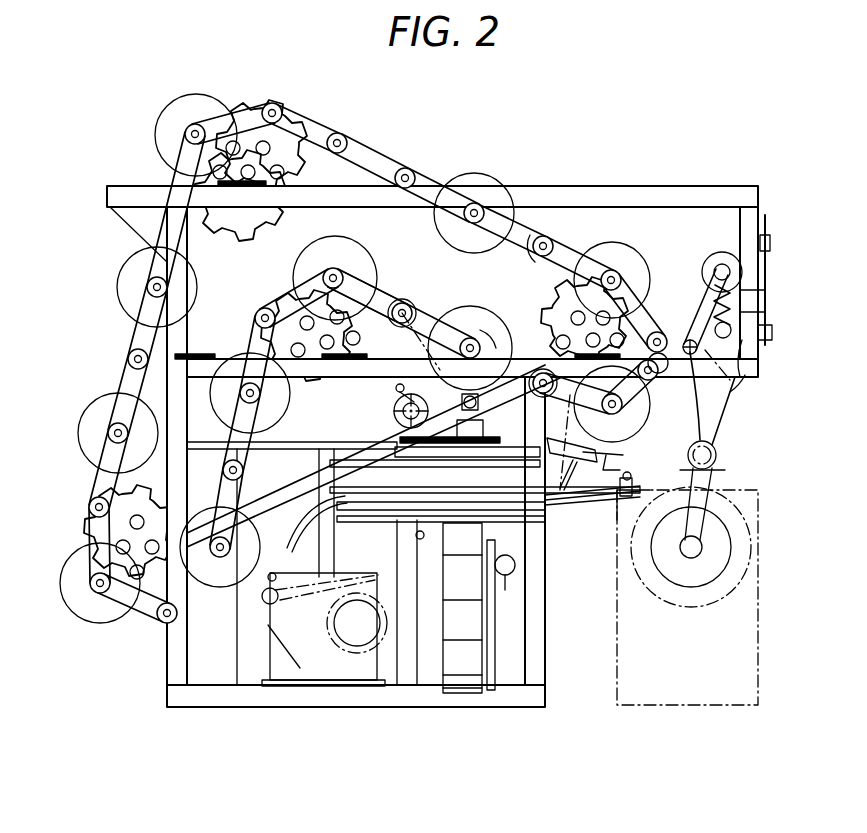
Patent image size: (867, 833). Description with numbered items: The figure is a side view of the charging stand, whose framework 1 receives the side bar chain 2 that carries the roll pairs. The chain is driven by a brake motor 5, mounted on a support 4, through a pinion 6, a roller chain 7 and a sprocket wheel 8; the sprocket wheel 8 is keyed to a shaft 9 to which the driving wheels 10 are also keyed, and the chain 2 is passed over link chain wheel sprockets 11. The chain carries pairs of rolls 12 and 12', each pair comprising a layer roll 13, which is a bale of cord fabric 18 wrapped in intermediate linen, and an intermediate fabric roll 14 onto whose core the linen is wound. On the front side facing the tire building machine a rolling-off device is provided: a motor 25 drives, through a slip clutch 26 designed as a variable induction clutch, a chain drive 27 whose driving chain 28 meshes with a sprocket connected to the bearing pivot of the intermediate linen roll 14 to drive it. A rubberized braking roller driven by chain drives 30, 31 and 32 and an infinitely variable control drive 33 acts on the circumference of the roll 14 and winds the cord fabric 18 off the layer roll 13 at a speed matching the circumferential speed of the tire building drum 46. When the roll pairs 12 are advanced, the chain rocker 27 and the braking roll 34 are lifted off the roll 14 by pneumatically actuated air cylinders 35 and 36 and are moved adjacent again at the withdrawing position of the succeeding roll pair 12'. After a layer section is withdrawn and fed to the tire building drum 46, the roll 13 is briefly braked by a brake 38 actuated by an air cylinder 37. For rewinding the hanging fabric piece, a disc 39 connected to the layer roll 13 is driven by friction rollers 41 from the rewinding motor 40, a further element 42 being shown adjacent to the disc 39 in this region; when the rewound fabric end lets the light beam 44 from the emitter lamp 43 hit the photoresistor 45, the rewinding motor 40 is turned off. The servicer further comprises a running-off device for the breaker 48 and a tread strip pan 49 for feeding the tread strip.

The framework 1 is at (516, 194).
The side bar chain 2 is at (278, 106).
The support 4 is at (412, 445).
The brake motor 5 is at (394, 417).
The pinion 6 is at (406, 398).
The roller chain 7 is at (262, 405).
The sprocket wheel 8 is at (404, 385).
The shaft 9 is at (290, 333).
The driving wheel 10 is at (372, 322).
The link chain wheel sprocket 11 is at (250, 232).
The pair of rolls 12 is at (636, 404).
The pair of rolls 12' is at (566, 197).
The layer roll 13 is at (640, 423).
The intermediate fabric roll 14 is at (662, 300).
The cord fabric 18 is at (718, 473).
The motor 25 is at (745, 388).
The slip clutch 26 is at (742, 335).
The chain drive 27 is at (686, 343).
The driving chain 28 is at (683, 330).
The chain drive 30 is at (722, 400).
The chain drive 31 is at (769, 296).
The chain drive 32 is at (768, 262).
The infinitely variable control drive 33 is at (722, 251).
The braking roll 34 is at (690, 388).
The air cylinder 35 is at (772, 240).
The air cylinder 36 is at (770, 330).
The air cylinder 37 is at (593, 497).
The brake 38 is at (603, 457).
The disc 39 is at (445, 313).
The rewinding motor 40 is at (490, 422).
The friction roller 41 is at (460, 396).
The wheel 42 is at (466, 320).
The emitter lamp 43 is at (578, 383).
The light beam 44 is at (593, 457).
The photoresistor 45 is at (533, 447).
The tire building drum 46 is at (707, 570).
The breaker 48 is at (380, 560).
The tread strip pan 49 is at (463, 507).